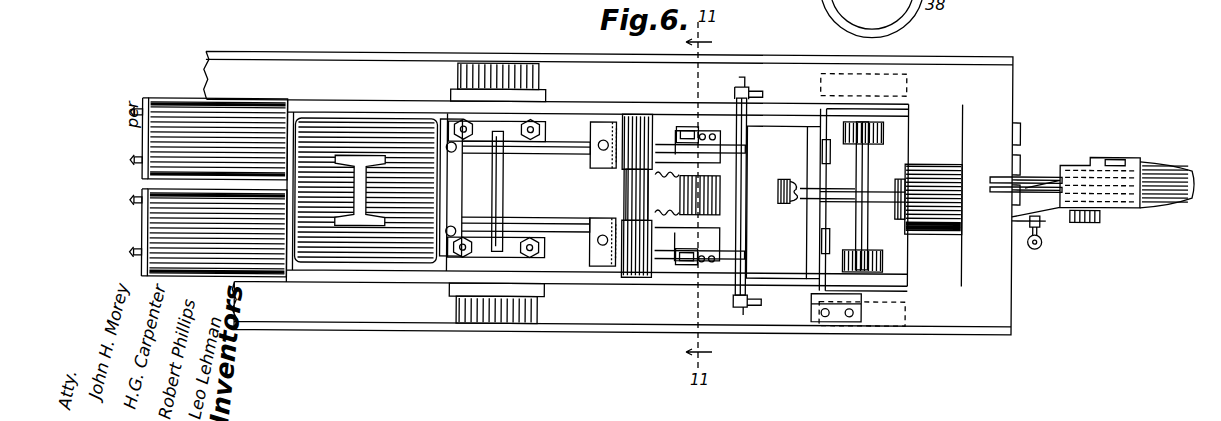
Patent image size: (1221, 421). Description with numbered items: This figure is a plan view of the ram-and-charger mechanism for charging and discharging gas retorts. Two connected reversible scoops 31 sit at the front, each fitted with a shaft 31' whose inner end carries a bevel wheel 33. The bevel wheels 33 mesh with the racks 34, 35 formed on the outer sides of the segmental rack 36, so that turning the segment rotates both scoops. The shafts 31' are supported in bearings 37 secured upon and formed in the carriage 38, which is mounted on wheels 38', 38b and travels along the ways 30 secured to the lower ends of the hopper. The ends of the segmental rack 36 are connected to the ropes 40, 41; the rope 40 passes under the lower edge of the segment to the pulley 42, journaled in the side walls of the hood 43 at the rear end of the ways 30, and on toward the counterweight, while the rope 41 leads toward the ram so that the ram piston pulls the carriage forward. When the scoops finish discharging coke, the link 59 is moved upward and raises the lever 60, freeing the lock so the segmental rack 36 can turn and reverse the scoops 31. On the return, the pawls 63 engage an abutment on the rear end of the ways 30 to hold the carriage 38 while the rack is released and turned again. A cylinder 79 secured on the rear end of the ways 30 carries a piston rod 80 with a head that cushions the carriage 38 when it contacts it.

The ways 30 is at (608, 193).
The reversible scoops 31 is at (194, 187).
The scoop shaft 31' is at (519, 188).
The bevel wheel 33 is at (612, 128).
The rack 34 is at (664, 215).
The rack 35 is at (658, 160).
The segmental rack 36 is at (780, 178).
The bearings 37 is at (378, 136).
The carriage 38 is at (607, 193).
The wheels 38' is at (497, 210).
The wheels 38b is at (905, 303).
The rope 40 is at (1026, 172).
The rope 41 is at (456, 187).
The pulley 42 is at (1168, 165).
The hood 43 is at (1122, 202).
The link 59 is at (688, 278).
The lever 60 is at (704, 140).
The pawls 63 is at (750, 97).
The cylinder 79 is at (940, 170).
The piston rod 80 is at (850, 200).